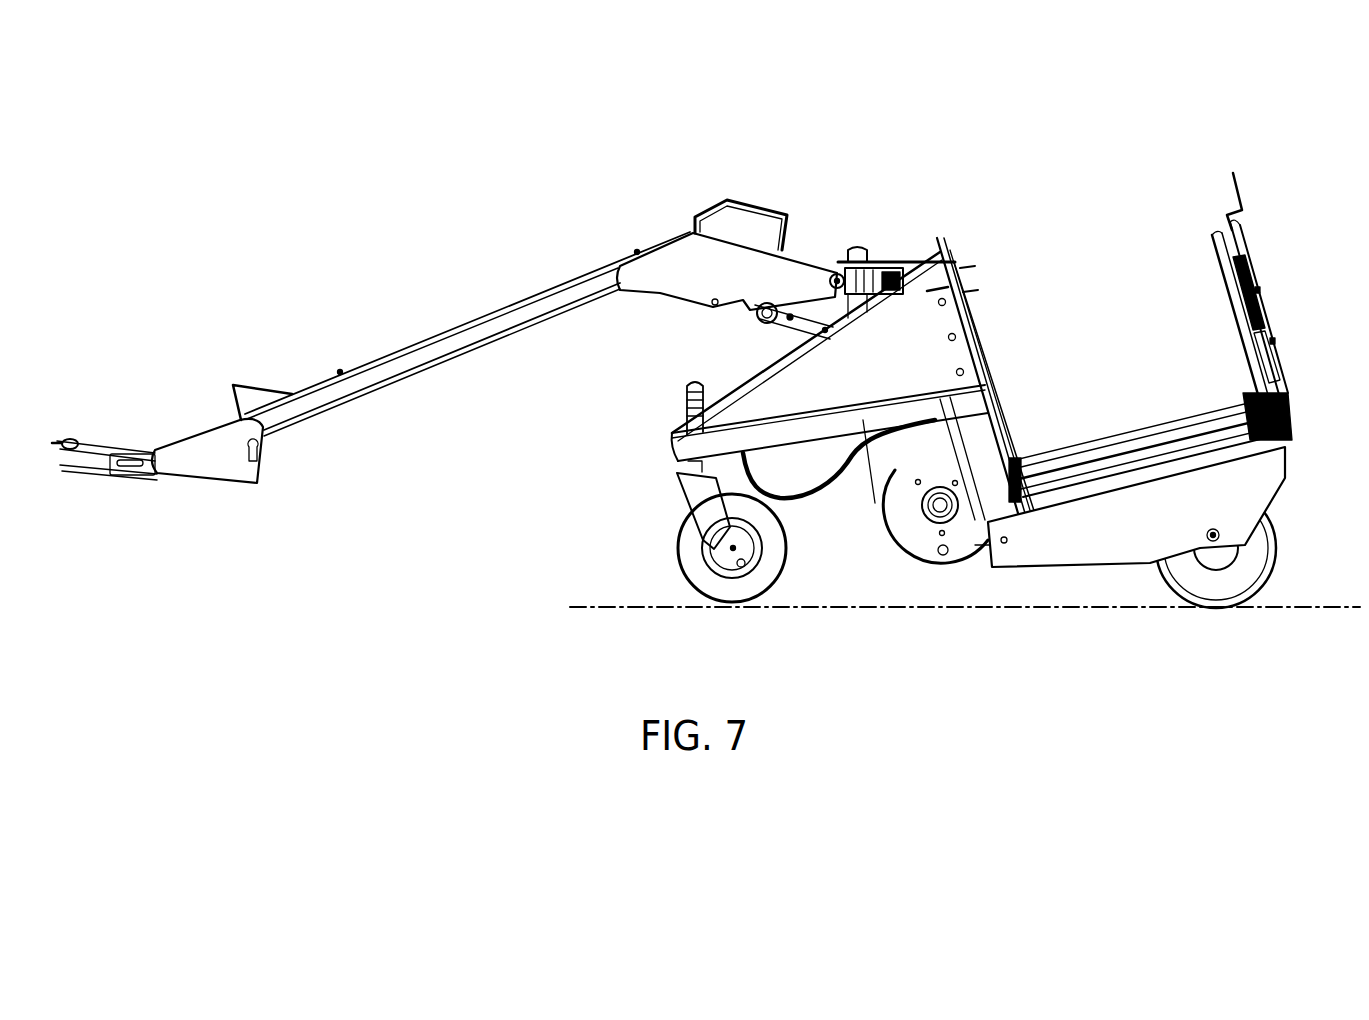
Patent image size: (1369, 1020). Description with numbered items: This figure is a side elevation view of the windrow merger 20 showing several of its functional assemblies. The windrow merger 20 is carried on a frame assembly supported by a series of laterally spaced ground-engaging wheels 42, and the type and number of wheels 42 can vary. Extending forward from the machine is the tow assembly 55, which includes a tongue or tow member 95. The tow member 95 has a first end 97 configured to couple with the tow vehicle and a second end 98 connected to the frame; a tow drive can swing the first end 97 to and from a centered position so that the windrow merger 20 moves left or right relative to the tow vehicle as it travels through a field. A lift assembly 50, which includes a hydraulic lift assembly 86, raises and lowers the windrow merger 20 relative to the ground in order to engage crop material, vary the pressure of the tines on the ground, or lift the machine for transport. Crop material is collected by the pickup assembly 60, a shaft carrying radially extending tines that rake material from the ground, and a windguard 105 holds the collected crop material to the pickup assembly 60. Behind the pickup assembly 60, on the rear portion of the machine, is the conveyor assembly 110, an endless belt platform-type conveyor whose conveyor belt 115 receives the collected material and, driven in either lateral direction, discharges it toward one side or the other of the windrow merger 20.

The windrow merger 20 is at (705, 168).
The ground-engaging wheels 42 is at (741, 590).
The lift assembly 50 is at (742, 322).
The tow assembly 55 is at (442, 305).
The pickup assembly 60 is at (912, 565).
The hydraulic lift assembly 86 is at (806, 326).
The tow member 95 is at (461, 342).
The first end 97 is at (118, 490).
The second end 98 is at (876, 235).
The windguard 105 is at (822, 490).
The conveyor assembly 110 is at (1175, 418).
The conveyor belt 115 is at (1110, 430).